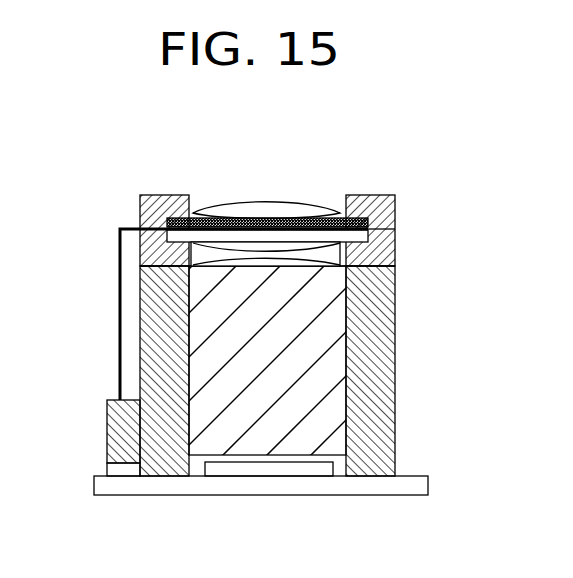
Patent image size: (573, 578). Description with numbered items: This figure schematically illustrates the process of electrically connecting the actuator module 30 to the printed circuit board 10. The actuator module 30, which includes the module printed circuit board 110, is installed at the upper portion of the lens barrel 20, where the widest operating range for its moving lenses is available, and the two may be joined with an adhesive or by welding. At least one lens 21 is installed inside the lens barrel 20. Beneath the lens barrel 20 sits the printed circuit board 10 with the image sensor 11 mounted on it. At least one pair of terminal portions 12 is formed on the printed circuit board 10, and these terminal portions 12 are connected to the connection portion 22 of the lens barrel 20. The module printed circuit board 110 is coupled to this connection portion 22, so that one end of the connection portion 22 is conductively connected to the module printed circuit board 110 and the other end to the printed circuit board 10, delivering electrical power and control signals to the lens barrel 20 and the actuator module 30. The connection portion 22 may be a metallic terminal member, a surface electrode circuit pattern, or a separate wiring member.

The printed circuit board 10 is at (427, 487).
The image sensor 11 is at (275, 469).
The terminal portion 12 is at (112, 468).
The lens barrel 20 is at (395, 303).
The lens 21 is at (330, 413).
The connection portion 22 is at (113, 419).
The actuator module 30 is at (390, 177).
The module printed circuit board 110 is at (120, 300).